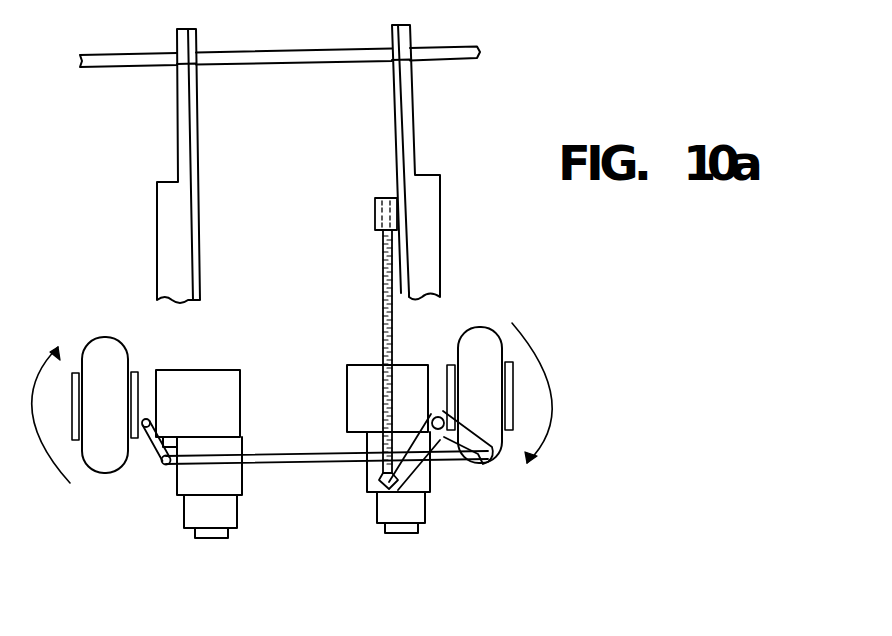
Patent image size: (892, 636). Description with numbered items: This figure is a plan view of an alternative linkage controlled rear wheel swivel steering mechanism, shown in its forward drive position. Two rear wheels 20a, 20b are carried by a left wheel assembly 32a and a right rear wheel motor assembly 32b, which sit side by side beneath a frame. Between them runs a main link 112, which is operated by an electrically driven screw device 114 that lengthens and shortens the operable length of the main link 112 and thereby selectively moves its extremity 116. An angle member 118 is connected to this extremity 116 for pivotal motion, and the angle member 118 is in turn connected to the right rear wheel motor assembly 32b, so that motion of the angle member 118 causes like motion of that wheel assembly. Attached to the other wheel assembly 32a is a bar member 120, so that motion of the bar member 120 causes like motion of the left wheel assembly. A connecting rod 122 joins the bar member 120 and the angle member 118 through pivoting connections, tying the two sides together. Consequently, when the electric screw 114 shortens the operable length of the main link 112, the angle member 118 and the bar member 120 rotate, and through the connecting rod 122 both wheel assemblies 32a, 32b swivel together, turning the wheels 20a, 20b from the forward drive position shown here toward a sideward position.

The left drive wheel 20a is at (97, 357).
The right drive wheel 20b is at (477, 342).
The left wheel assembly 32a is at (220, 382).
The right rear wheel motor assembly 32b is at (347, 382).
The main link 112 is at (382, 298).
The electrically driven screw device 114 is at (375, 222).
The extremity 116 is at (385, 480).
The angle member 118 is at (433, 455).
The bar member 120 is at (155, 447).
The connecting rod 122 is at (312, 462).